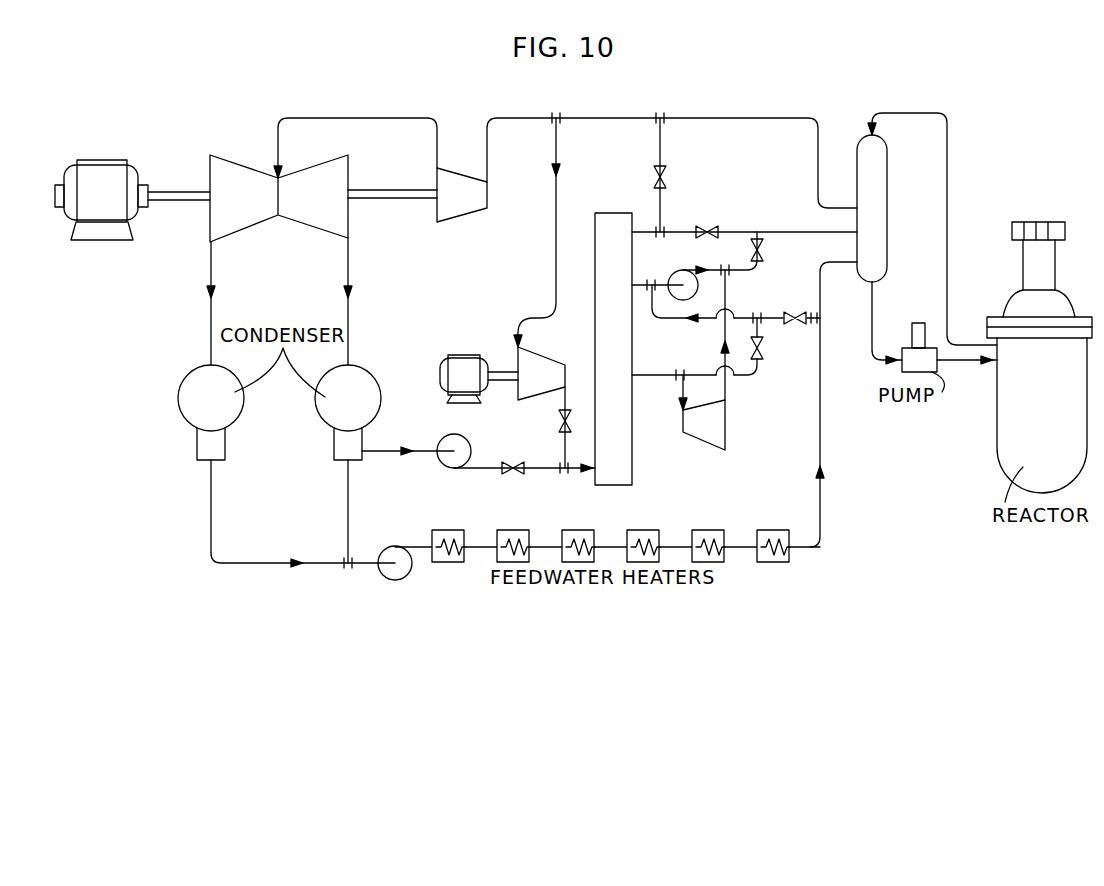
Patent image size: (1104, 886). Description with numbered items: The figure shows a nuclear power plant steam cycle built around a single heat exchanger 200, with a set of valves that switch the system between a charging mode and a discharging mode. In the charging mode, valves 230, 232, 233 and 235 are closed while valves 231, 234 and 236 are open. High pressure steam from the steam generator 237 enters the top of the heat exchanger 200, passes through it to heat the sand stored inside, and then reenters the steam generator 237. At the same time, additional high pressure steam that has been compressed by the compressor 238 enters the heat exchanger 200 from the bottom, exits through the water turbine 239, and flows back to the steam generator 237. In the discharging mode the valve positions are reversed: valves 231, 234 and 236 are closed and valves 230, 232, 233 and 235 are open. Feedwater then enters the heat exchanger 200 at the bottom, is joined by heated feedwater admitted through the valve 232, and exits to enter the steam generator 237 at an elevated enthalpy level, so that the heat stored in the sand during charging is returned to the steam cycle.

The heat exchanger 200 is at (607, 218).
The valve 230 is at (518, 471).
The valve 231 is at (560, 430).
The valve 232 is at (801, 314).
The valve 233 is at (762, 354).
The valve 234 is at (762, 260).
The valve 235 is at (698, 230).
The valve 236 is at (668, 172).
The steam generator 237 is at (862, 150).
The compressor 238 is at (541, 366).
The water turbine 239 is at (718, 428).